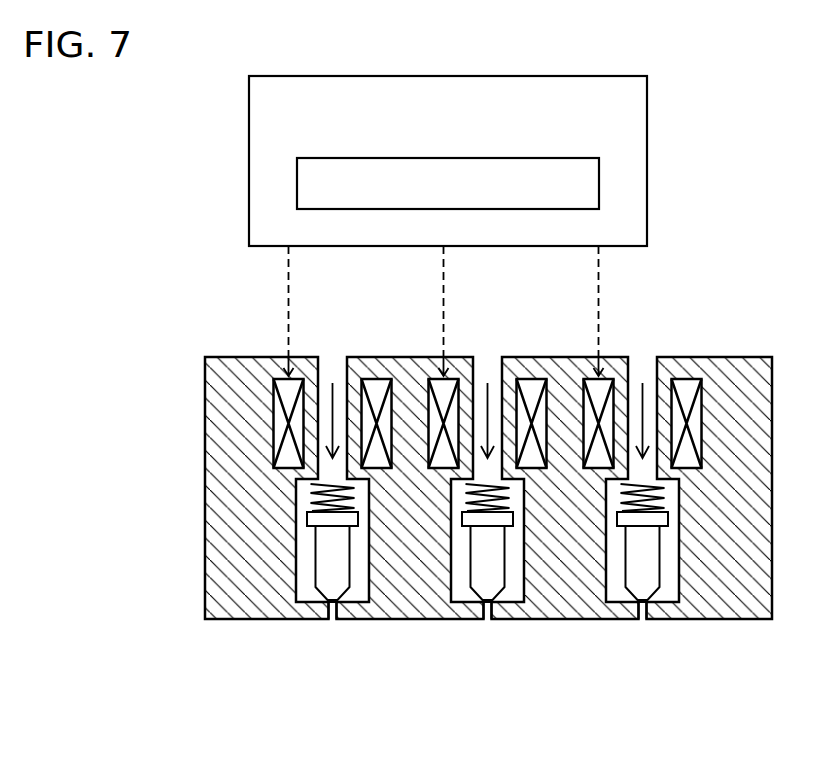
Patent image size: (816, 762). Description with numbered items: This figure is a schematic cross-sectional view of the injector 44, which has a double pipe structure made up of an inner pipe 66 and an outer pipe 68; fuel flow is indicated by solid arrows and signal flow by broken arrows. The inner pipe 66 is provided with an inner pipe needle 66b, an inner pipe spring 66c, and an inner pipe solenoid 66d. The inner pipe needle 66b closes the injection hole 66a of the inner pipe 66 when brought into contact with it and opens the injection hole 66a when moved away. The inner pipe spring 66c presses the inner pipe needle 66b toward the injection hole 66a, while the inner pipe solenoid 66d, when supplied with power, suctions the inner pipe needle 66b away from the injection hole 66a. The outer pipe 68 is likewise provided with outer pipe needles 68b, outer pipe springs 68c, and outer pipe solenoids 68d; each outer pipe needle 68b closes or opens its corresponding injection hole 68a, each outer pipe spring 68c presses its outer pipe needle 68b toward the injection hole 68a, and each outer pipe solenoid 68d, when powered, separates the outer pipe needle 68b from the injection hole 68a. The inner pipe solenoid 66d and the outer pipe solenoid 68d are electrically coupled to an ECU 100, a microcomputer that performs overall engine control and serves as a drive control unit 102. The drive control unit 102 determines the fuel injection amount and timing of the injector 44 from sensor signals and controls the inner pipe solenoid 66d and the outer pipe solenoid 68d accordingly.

The injector 44 is at (205, 498).
The inner pipe 66 is at (499, 612).
The injection hole 66a is at (486, 610).
The inner pipe needle 66b is at (504, 568).
The inner pipe spring 66c is at (513, 498).
The inner pipe solenoid 66d is at (547, 420).
The outer pipe 68 is at (500, 612).
The injection hole 68a is at (331, 610).
The outer pipe needle 68b is at (349, 568).
The outer pipe spring 68c is at (358, 498).
The outer pipe solenoid 68d is at (391, 420).
The ECU 100 is at (647, 119).
The drive control unit 102 is at (599, 178).